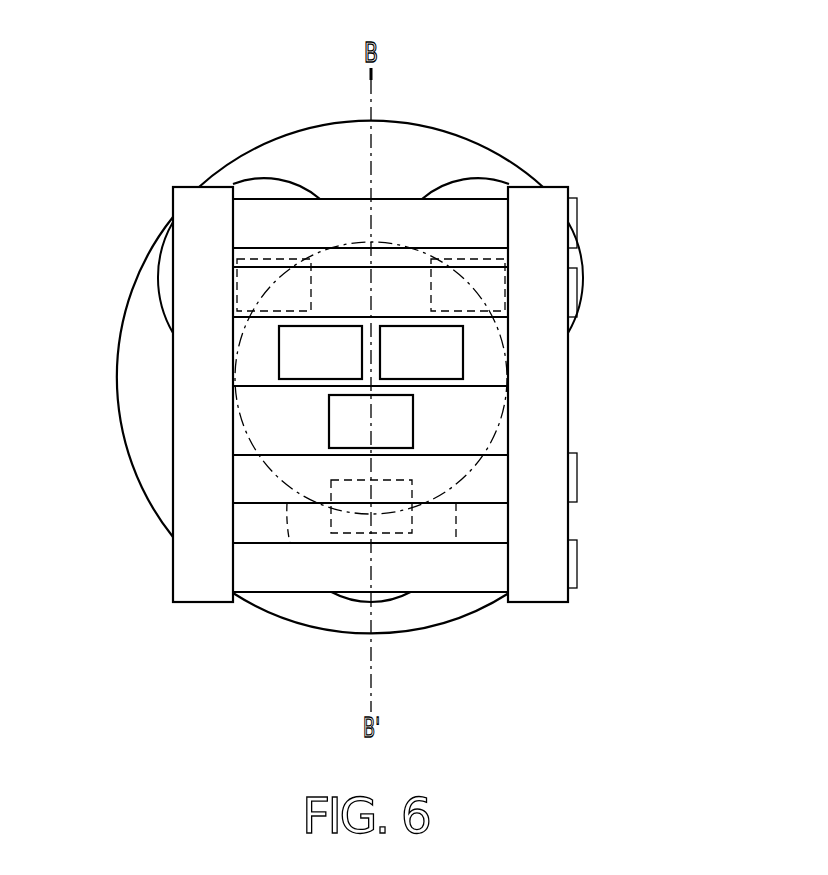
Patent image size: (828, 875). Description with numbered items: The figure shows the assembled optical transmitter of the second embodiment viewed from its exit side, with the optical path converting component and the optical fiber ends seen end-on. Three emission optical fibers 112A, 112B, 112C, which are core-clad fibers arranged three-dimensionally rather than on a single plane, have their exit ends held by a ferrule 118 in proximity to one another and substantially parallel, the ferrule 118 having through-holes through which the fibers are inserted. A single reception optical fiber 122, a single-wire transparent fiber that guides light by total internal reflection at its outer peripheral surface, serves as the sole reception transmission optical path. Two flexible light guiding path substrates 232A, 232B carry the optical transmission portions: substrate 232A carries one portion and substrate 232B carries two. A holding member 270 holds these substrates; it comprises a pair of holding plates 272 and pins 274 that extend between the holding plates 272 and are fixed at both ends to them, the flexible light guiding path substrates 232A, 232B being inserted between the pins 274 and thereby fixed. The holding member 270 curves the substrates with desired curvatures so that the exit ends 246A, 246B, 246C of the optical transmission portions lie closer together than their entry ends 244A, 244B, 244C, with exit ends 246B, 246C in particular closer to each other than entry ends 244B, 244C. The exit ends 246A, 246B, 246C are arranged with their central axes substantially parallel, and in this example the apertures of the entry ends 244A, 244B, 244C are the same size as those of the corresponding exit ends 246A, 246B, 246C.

The emission optical fiber 112A is at (387, 598).
The emission optical fiber 112B is at (265, 188).
The emission optical fiber 112C is at (480, 185).
The ferrule 118 is at (446, 144).
The reception optical fiber 122 is at (280, 473).
The flexible light guiding path substrate 232A is at (279, 418).
The flexible light guiding path substrate 232B is at (253, 339).
The entry end of optical transmission portion 244A is at (400, 527).
The entry end of optical transmission portion 244B is at (263, 282).
The entry end of optical transmission portion 244C is at (497, 283).
The exit end of optical transmission portion 246A is at (402, 418).
The exit end of optical transmission portion 246B is at (292, 353).
The exit end of optical transmission portion 246C is at (440, 356).
The holding member 270 is at (594, 172).
The holding plate 272 is at (186, 565).
The pin 274 is at (345, 220).